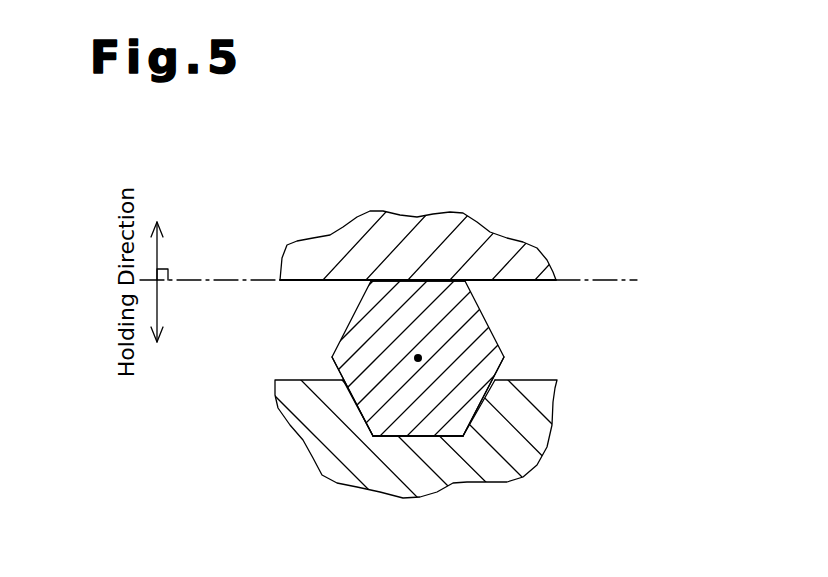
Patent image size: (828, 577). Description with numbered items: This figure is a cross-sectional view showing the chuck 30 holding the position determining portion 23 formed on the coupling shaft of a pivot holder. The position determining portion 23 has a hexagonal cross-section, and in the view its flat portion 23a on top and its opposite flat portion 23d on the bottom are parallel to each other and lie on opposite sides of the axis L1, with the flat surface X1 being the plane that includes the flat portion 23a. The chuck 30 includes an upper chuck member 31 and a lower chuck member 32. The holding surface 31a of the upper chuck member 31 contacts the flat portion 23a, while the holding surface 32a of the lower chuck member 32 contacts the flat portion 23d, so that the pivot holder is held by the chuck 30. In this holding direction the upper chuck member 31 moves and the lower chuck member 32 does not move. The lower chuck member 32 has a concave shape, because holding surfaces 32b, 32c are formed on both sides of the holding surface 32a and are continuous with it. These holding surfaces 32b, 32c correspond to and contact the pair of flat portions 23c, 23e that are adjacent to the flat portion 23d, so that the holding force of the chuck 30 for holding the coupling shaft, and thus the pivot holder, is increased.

The position determining portion 23 is at (476, 306).
The flat portion 23a is at (457, 280).
The flat portion 23c is at (478, 414).
The flat portion 23d is at (428, 436).
The flat portion 23e is at (360, 410).
The chuck 30 is at (453, 372).
The upper chuck member 31 is at (557, 280).
The holding surface 31a is at (405, 281).
The lower chuck member 32 is at (559, 381).
The holding surface 32a is at (403, 434).
The holding surface 32b is at (486, 392).
The holding surface 32c is at (354, 408).
The axis L1 is at (418, 357).
The flat surface X1 is at (210, 279).